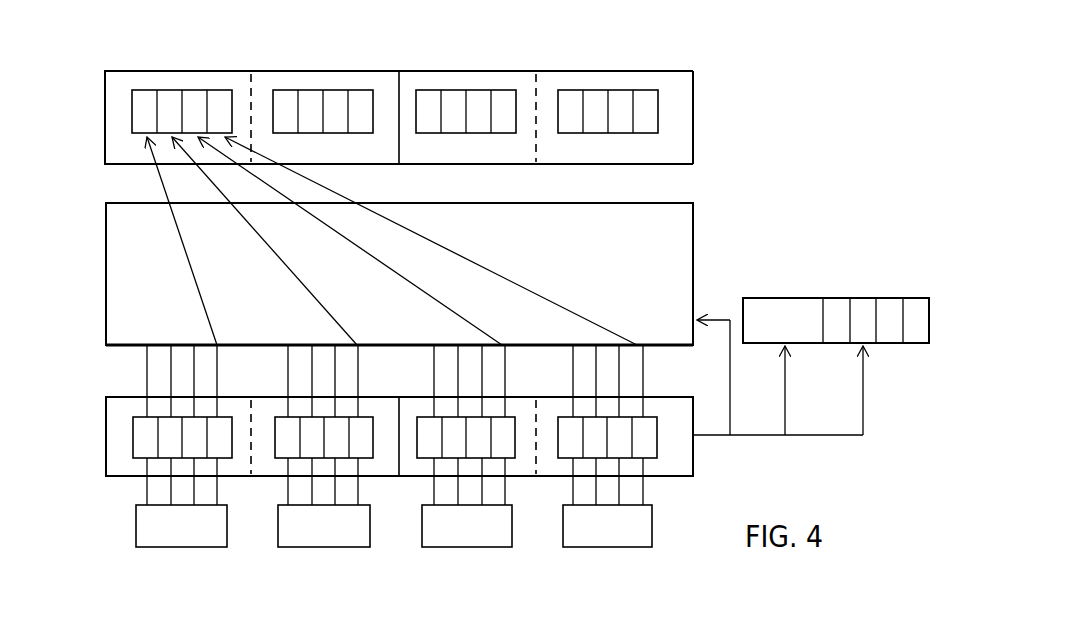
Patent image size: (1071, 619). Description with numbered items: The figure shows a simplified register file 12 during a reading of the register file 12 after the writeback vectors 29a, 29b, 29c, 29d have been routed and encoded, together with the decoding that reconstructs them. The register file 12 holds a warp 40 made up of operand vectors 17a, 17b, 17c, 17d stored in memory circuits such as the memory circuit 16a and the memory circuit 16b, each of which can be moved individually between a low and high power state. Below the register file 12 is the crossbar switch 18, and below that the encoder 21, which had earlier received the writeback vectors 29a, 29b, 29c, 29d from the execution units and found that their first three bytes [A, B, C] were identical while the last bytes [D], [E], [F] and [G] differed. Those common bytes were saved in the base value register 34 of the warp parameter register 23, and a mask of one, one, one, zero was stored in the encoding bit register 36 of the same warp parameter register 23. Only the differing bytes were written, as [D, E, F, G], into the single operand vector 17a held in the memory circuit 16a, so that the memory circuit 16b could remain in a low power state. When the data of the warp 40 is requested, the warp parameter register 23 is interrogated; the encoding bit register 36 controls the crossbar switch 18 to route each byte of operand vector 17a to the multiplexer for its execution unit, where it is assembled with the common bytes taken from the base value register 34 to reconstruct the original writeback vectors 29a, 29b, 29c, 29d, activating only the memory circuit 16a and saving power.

The register file 12 is at (92, 134).
The warp 40 is at (709, 142).
The memory circuit 16a is at (126, 55).
The memory circuit 16b is at (674, 55).
The operand vector 17a is at (167, 92).
The operand vector 17b is at (315, 92).
The operand vector 17c is at (455, 92).
The operand vector 17d is at (597, 92).
The crossbar switch 18 is at (106, 307).
The encoder 21 is at (705, 459).
The writeback vector 29a is at (133, 420).
The writeback vector 29b is at (275, 420).
The writeback vector 29c is at (417, 420).
The writeback vector 29d is at (558, 420).
The warp parameter register 23 is at (826, 343).
The encoding bit register 36 is at (820, 297).
The base value register 34 is at (940, 320).